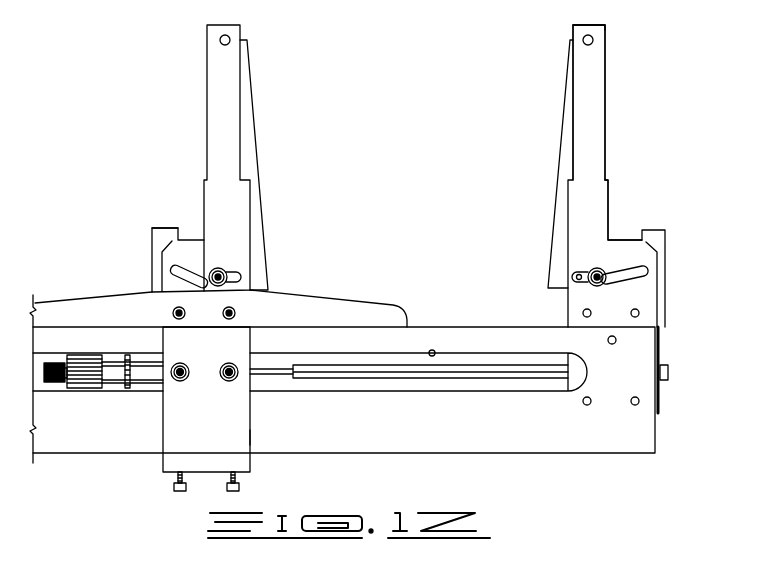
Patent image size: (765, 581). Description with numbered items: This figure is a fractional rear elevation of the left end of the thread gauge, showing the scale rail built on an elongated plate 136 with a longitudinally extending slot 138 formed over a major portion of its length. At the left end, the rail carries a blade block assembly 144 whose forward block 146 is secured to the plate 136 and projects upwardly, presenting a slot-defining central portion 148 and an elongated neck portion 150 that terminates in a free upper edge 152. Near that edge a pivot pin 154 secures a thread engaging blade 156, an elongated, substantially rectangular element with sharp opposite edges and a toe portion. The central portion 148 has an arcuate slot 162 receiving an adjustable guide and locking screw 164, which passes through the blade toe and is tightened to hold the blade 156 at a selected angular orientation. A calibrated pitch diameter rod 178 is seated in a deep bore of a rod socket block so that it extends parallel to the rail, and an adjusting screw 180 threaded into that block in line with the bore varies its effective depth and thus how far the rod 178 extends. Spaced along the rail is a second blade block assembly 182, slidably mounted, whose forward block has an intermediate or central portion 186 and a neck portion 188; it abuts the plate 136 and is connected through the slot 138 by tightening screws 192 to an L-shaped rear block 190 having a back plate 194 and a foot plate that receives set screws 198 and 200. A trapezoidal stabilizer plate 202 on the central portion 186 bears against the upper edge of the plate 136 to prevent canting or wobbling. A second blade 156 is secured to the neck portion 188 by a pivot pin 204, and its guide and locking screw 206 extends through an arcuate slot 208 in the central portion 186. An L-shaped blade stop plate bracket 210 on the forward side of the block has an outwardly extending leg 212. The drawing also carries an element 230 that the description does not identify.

The elongated plate 136 is at (460, 428).
The slot 138 is at (432, 348).
The blade block assembly 144 is at (663, 348).
The forward block 146 is at (593, 199).
The slot-defining central portion 148 is at (575, 298).
The elongated neck portion 150 is at (599, 88).
The free upper edge 152 is at (593, 24).
The pivot pin 154 is at (584, 39).
The thread engaging blade 156 is at (253, 160).
The arcuate slot 162 is at (576, 278).
The adjustable guide and locking screw 164 is at (589, 271).
The calibrated pitch diameter rod 178 is at (345, 379).
The adjusting screw 180 is at (665, 380).
The second blade block assembly 182 is at (152, 404).
The intermediate or central portion 186 is at (210, 259).
The neck portion 188 is at (222, 70).
The L-shaped rear block 190 is at (250, 437).
The tightening screws 192 is at (184, 362).
The back plate 194 is at (215, 420).
The set screw 198 is at (172, 488).
The set screw 200 is at (244, 487).
The stabilizer plate 202 is at (312, 318).
The pivot pin 204 is at (231, 39).
The guide and locking screw 206 is at (224, 272).
The arcuate slot 208 is at (172, 268).
The L-shaped blade stop plate bracket 210 is at (151, 236).
The outwardly extending leg 212 is at (165, 227).
The shaft 230 is at (270, 375).